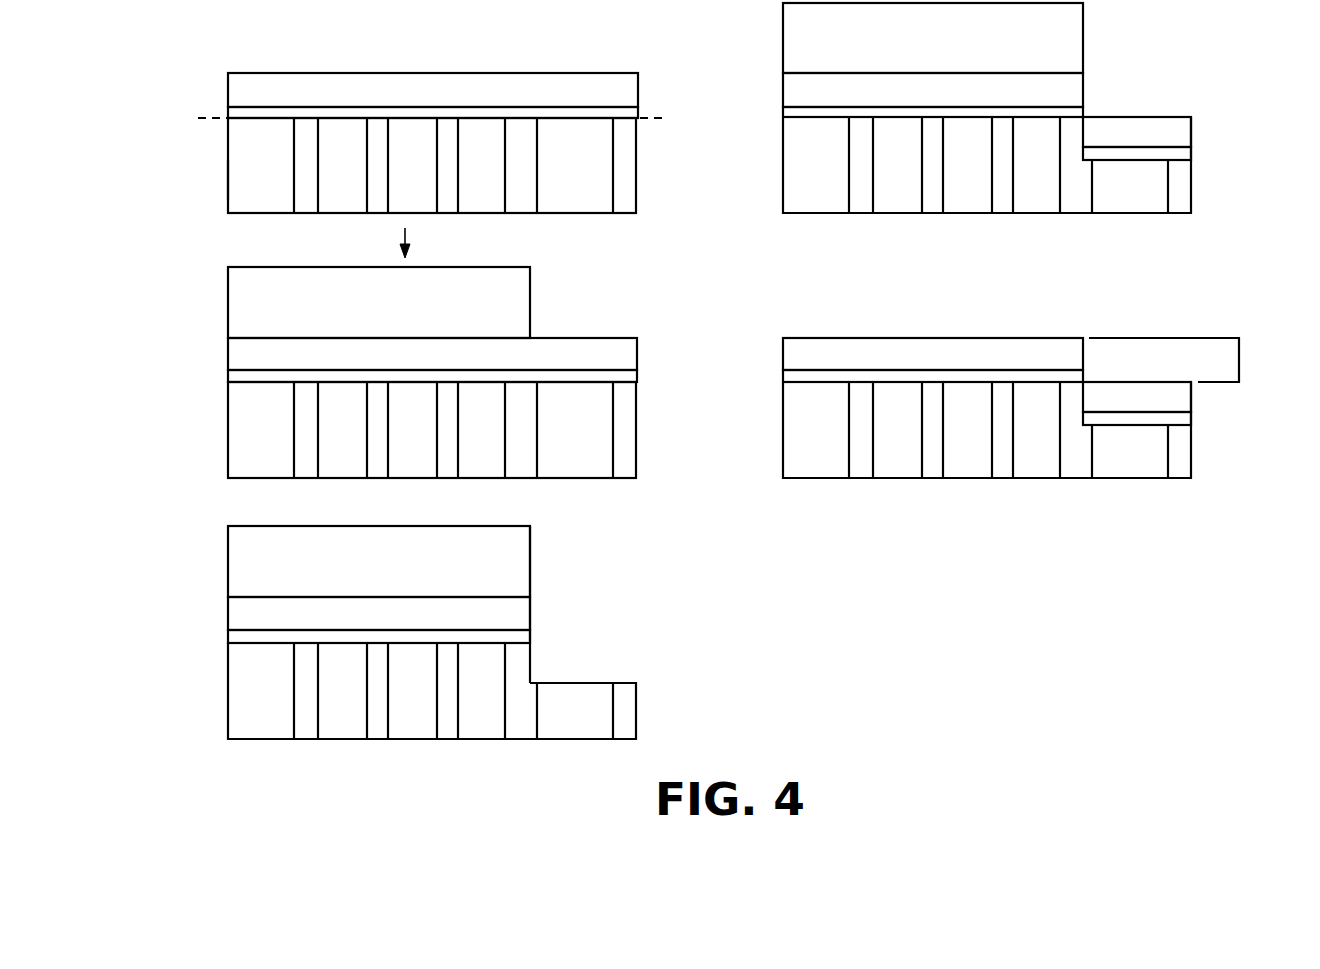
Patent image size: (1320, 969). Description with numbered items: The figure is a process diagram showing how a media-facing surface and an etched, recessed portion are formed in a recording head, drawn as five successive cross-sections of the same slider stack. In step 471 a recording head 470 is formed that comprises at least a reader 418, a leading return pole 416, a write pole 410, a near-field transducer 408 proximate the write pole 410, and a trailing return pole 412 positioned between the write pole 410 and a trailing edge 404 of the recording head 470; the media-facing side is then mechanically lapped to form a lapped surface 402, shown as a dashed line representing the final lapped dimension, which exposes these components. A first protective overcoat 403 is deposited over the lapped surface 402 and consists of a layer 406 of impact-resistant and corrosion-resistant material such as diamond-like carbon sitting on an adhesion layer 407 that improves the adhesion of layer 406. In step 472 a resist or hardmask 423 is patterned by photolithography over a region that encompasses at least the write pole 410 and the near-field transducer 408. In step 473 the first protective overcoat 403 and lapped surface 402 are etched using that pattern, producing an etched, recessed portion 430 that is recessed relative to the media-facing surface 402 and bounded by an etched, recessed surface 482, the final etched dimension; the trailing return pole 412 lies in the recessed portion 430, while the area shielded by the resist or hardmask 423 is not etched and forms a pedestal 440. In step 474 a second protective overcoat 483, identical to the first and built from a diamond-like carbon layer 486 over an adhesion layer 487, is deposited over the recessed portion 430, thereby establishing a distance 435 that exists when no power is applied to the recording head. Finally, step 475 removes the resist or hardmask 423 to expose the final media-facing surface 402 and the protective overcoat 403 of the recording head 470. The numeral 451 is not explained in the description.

The lapped surface 402 is at (367, 105).
The first protective overcoat 403 is at (641, 98).
The trailing edge 404 is at (637, 172).
The layer of impact-resistant and corrosion resistant material 406 is at (403, 85).
The adhesion layer 407 is at (437, 115).
The near-field transducer 408 is at (495, 180).
The write pole 410 is at (495, 146).
The trailing return pole 412 is at (577, 178).
The leading return pole 416 is at (418, 203).
The reader 418 is at (342, 205).
The resist or hardmask 423 is at (531, 305).
The etched, recessed portion 430 is at (557, 654).
The distance 435 is at (1240, 360).
The pedestal 440 is at (546, 596).
The AlTiC substrate 451 is at (237, 203).
The recording head 470 is at (232, 183).
The step of forming the recording head, lapping, and depositing the first protective 471 is at (405, 147).
The step of patterning a resist or hardmask 472 is at (373, 372).
The step of etching the first protective overcoat and lapped surface 473 is at (375, 632).
The step of depositing a second protective overcoat 474 is at (980, 132).
The step of removing the resist or hardmask 475 is at (1013, 373).
The etched, recessed surface 482 is at (607, 682).
The second protective overcoat 483 is at (1168, 137).
The layer of impact-resistant and corrosion resistant material 486 is at (1120, 120).
The adhesion layer 487 is at (1181, 156).